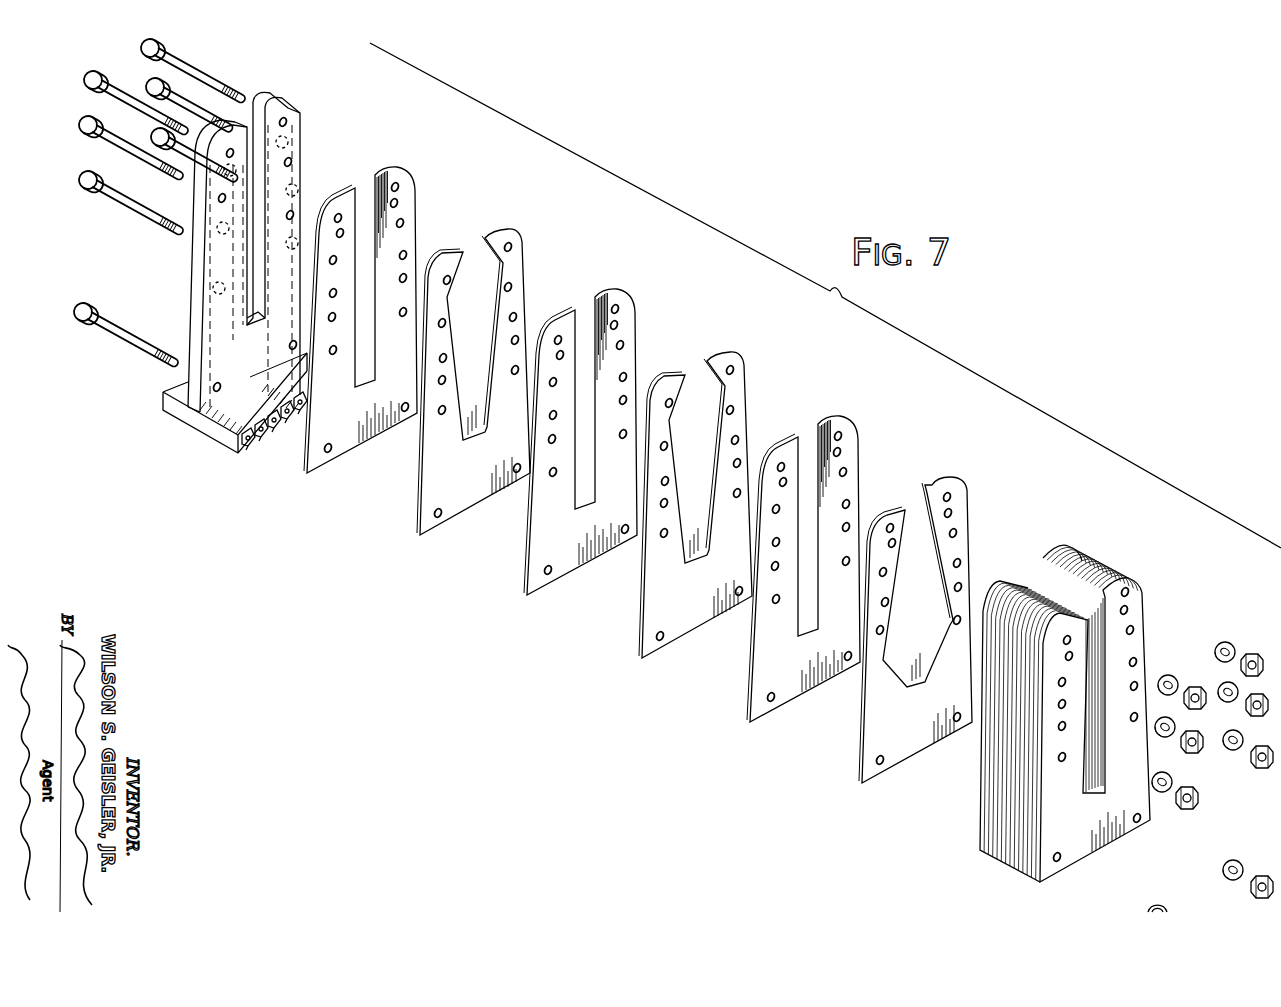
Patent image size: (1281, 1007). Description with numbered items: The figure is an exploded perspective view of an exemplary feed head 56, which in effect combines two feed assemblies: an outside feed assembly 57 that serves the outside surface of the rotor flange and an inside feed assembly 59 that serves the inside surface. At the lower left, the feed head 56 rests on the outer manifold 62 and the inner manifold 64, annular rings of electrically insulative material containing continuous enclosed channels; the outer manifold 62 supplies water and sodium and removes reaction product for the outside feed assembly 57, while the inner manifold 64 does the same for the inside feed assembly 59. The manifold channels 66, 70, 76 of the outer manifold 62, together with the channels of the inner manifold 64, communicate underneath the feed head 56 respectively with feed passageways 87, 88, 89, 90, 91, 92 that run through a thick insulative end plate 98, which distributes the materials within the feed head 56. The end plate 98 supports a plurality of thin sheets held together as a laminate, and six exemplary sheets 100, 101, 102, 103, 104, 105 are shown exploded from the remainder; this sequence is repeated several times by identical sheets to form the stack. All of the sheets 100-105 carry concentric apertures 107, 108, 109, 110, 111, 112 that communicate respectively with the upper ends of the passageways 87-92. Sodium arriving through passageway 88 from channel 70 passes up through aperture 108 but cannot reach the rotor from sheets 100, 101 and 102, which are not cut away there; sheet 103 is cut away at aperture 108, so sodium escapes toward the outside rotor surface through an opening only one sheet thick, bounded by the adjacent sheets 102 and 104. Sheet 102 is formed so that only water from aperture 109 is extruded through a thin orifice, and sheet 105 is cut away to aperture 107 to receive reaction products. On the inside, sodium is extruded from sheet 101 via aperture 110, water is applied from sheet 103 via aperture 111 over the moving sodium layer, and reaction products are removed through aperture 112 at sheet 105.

The feed head 56 is at (1130, 844).
The outside feed assembly 57 is at (1012, 876).
The inside feed assembly 59 is at (1143, 588).
The outer manifold 62 is at (231, 416).
The inner manifold 64 is at (282, 387).
The manifold channel 66 is at (247, 449).
The manifold channel 70 is at (264, 443).
The manifold channel 76 is at (281, 430).
The feed passageway 87 is at (216, 290).
The feed passageway 88 is at (218, 228).
The feed passageway 89 is at (226, 168).
The feed passageway 90 is at (288, 142).
The feed passageway 91 is at (298, 188).
The feed passageway 92 is at (298, 243).
The end plate 98 is at (303, 104).
The sheet 100 is at (402, 172).
The sheet 101 is at (512, 236).
The sheet 102 is at (626, 298).
The sheet 103 is at (737, 362).
The sheet 104 is at (852, 432).
The sheet 105 is at (962, 483).
The aperture 107 is at (884, 660).
The aperture 108 is at (886, 603).
The aperture 109 is at (892, 546).
The aperture 110 is at (950, 513).
The aperture 111 is at (957, 563).
The aperture 112 is at (960, 618).